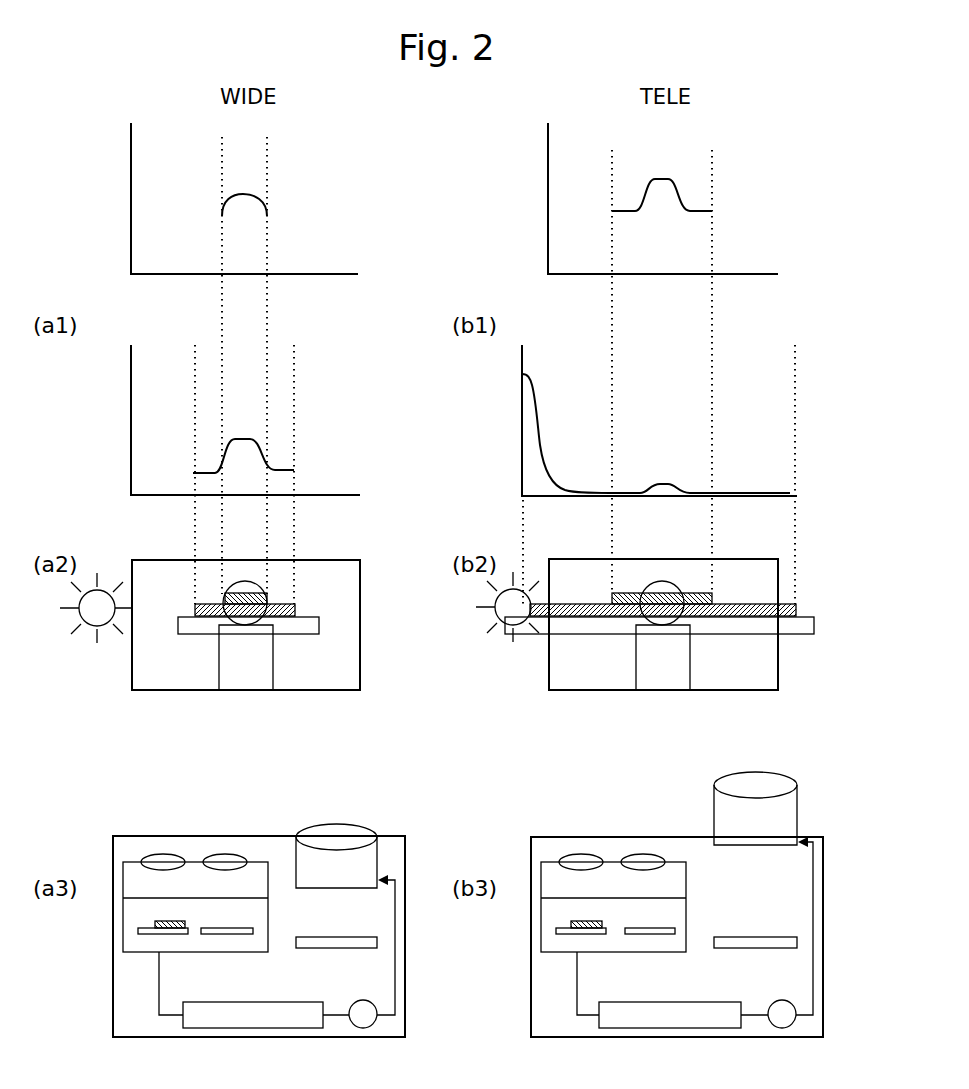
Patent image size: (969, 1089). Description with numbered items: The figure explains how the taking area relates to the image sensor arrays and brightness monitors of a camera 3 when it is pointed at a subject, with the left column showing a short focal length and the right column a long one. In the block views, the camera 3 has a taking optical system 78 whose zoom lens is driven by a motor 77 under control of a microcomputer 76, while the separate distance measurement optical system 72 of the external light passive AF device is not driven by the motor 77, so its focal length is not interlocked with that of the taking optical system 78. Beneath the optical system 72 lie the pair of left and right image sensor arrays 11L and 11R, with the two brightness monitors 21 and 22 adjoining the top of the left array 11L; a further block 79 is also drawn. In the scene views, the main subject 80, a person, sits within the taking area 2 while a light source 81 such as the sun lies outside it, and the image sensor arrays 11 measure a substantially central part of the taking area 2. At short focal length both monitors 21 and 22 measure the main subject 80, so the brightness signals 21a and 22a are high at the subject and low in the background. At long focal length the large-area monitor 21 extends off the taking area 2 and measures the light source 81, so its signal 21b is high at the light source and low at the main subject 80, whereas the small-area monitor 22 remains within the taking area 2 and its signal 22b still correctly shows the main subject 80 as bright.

The brightness signal 22a is at (272, 206).
The brightness signal 21a is at (286, 466).
The brightness signal 22b is at (694, 206).
The brightness signal 21b is at (702, 465).
The taking area 2 is at (347, 560).
The brightness monitor 22 is at (270, 599).
The brightness monitor 21 is at (298, 610).
The image sensor arrays 11 is at (320, 627).
The light source 81 is at (97, 629).
The main subject 80 is at (247, 682).
The camera 3 is at (390, 833).
The distance measurement optical system 72 is at (210, 854).
The taking optical system 78 is at (346, 823).
The display 79 is at (378, 943).
The left image sensor array 11L is at (152, 936).
The right image sensor array 11R is at (232, 934).
The microcomputer 76 is at (226, 1030).
The motor 77 is at (366, 1030).